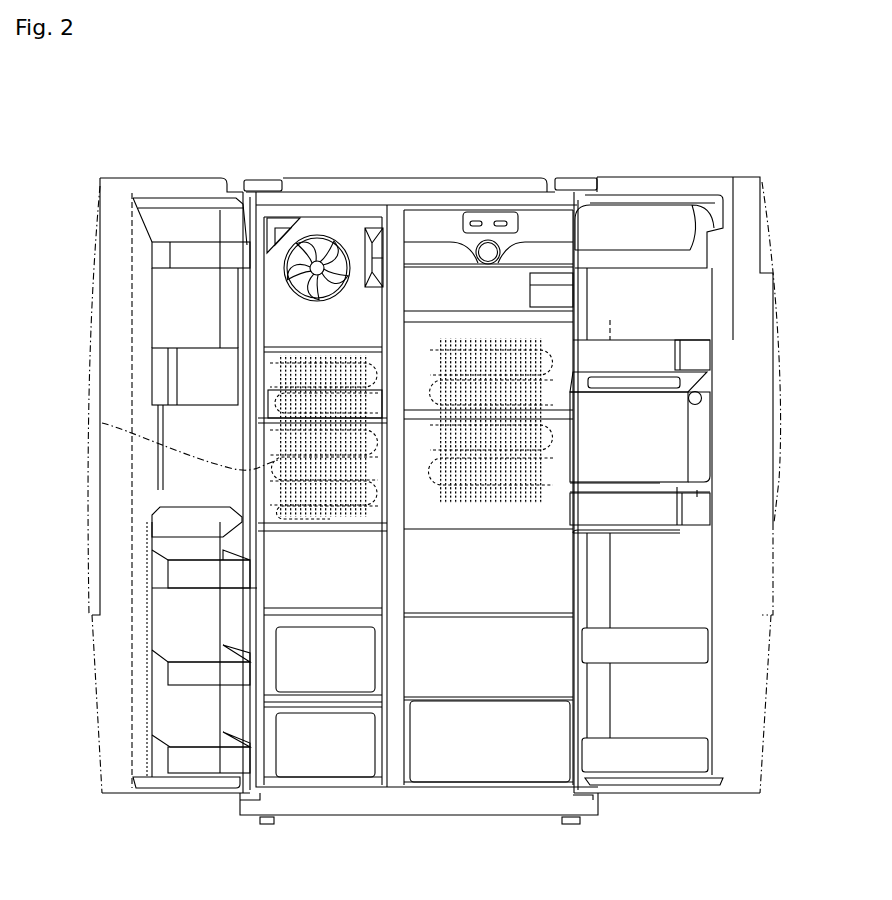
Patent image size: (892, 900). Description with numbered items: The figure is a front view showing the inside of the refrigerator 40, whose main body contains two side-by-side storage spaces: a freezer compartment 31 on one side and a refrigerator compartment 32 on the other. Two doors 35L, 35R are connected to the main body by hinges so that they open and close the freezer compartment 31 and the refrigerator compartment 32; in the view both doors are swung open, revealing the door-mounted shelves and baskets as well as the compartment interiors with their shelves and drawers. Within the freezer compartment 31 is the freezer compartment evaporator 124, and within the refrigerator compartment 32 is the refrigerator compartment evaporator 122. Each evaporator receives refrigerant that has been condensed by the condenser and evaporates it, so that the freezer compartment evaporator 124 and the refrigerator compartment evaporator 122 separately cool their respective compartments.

The refrigerator main body 40 is at (498, 168).
The freezer compartment 31 is at (317, 545).
The refrigerator compartment 32 is at (550, 570).
The door 35L is at (91, 692).
The door 35R is at (691, 485).
The refrigerator compartment evaporator 122 is at (553, 460).
The freezer compartment evaporator 124 is at (102, 423).